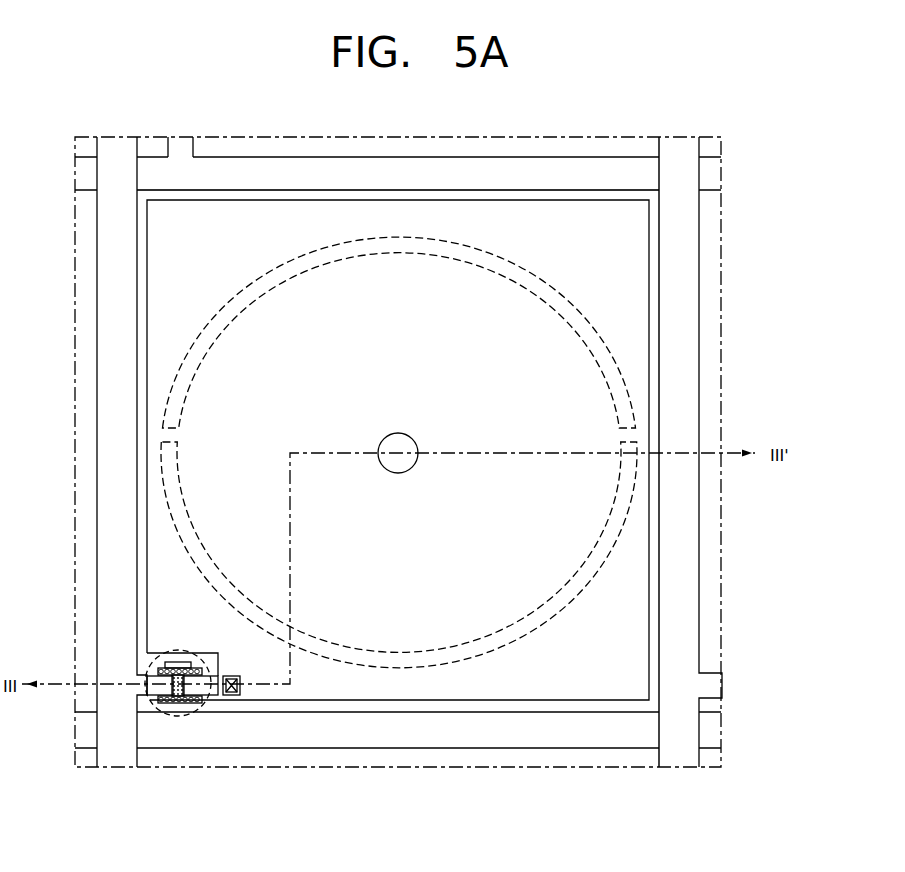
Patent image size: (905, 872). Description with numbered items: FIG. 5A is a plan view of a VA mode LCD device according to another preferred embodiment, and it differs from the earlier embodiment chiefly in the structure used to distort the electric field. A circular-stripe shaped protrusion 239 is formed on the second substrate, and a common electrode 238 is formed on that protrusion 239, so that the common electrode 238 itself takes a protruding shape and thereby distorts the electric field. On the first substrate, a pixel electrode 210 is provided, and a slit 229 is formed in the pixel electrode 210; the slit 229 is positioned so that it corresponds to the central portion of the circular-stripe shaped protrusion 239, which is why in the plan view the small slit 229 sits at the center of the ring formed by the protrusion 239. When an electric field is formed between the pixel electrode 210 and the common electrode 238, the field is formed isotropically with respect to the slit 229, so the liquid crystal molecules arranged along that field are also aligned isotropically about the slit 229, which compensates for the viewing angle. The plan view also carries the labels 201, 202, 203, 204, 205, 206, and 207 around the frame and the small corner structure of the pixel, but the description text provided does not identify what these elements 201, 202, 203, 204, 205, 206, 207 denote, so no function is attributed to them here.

The substrate 201 is at (547, 732).
The data line 202 is at (680, 653).
The gate electrode 203 is at (185, 724).
The source electrode 204 is at (175, 707).
The drain electrode 205 is at (193, 707).
The semiconductor layer 206 is at (147, 697).
The drain contact hole 207 is at (207, 692).
The pixel electrode 210 is at (649, 287).
The slit 229 is at (402, 458).
The common electrode 238 is at (655, 247).
The circular-stripe shaped protrusion 239 is at (607, 362).